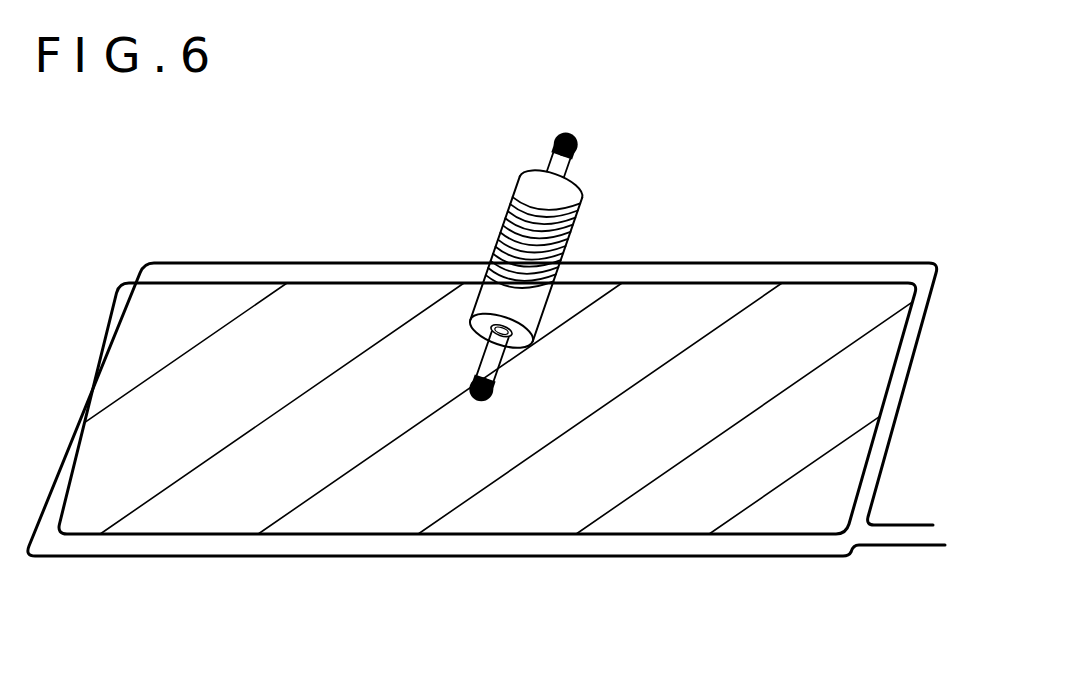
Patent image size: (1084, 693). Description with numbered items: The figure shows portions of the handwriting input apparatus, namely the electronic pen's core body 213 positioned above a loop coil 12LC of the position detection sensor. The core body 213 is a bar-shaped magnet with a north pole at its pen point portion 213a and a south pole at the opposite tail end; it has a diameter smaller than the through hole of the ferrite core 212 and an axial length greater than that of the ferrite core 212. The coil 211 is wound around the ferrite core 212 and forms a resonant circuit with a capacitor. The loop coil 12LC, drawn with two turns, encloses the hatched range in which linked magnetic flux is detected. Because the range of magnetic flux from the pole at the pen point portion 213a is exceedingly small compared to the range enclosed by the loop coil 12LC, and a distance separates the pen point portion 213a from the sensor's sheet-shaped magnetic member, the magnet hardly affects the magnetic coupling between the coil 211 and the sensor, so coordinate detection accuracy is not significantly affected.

The loop coil 12LC is at (728, 548).
The coil 211 is at (503, 225).
The ferrite core 212 is at (532, 307).
The core body 213 is at (560, 161).
The pen point portion 213a is at (473, 398).